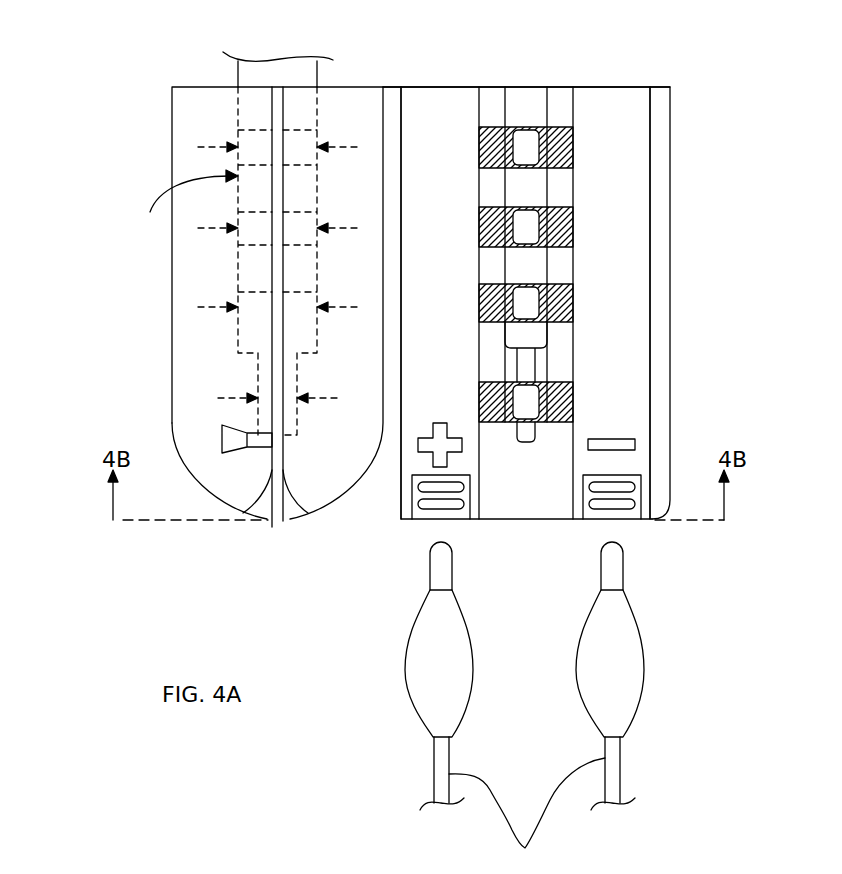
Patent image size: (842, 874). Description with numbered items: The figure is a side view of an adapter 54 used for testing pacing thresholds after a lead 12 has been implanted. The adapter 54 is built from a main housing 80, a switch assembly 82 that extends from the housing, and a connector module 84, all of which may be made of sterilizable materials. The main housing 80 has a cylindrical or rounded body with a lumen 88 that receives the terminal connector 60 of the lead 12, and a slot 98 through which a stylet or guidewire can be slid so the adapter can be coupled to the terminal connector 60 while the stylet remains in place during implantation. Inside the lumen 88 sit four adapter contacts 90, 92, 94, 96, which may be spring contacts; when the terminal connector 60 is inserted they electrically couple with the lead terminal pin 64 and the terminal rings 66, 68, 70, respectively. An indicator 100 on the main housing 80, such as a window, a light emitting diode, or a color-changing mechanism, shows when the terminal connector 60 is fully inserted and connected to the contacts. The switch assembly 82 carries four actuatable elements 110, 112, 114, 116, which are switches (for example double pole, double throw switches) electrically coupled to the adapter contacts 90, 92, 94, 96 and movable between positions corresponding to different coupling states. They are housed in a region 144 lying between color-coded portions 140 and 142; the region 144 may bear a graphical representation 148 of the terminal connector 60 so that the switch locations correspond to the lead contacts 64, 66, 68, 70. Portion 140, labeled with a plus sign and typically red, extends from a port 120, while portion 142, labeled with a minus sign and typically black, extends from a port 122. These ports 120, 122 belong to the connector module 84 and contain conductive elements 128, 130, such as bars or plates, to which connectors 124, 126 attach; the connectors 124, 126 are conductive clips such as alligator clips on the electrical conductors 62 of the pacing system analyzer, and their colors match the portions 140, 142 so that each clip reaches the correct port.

The adapter 54 is at (98, 164).
The lead 12 is at (287, 65).
The main housing 80 is at (202, 102).
The switch assembly 82 is at (662, 153).
The slot 98 is at (275, 520).
The terminal connector 60 is at (325, 101).
The indicator 100 is at (222, 434).
The adapter contact 96 is at (209, 145).
The lumen 88 is at (186, 205).
The adapter contact 94 is at (210, 232).
The adapter contact 92 is at (210, 310).
The adapter contact 90 is at (230, 398).
The terminal ring 70 is at (308, 152).
The terminal ring 68 is at (308, 233).
The terminal ring 66 is at (308, 313).
The lead terminal pin 64 is at (290, 423).
The region 144 is at (535, 55).
The portion 140 is at (460, 87).
The portion 142 is at (628, 87).
The graphical representation 148 is at (520, 87).
The actuatable element 116 is at (530, 147).
The actuatable element 114 is at (525, 227).
The actuatable element 112 is at (525, 308).
The actuatable element 110 is at (525, 408).
The connector module 84 is at (533, 548).
The port 120 is at (423, 513).
The conductive element 128 is at (448, 513).
The port 122 is at (627, 513).
The conductive element 130 is at (602, 513).
The connector 124 is at (405, 678).
The connector 126 is at (577, 678).
The electrical conductors 62 is at (527, 815).